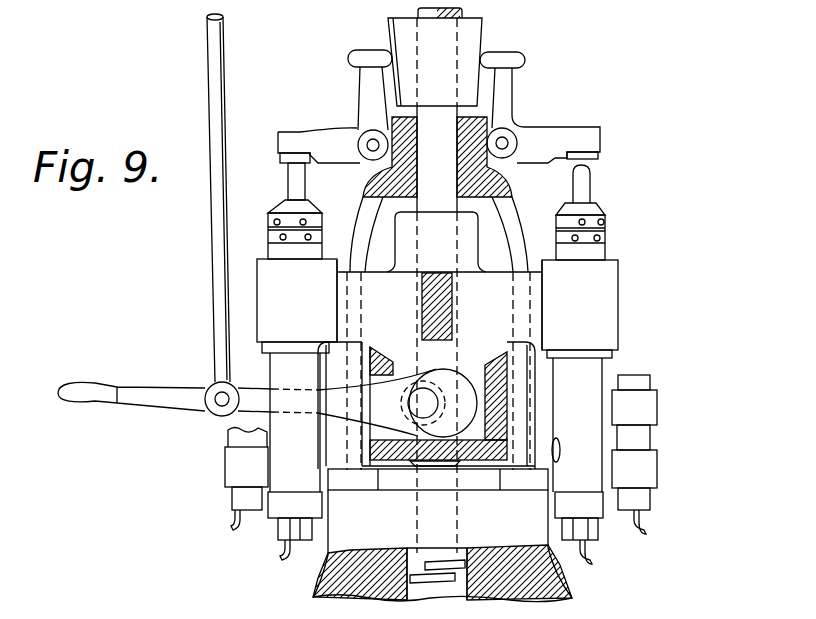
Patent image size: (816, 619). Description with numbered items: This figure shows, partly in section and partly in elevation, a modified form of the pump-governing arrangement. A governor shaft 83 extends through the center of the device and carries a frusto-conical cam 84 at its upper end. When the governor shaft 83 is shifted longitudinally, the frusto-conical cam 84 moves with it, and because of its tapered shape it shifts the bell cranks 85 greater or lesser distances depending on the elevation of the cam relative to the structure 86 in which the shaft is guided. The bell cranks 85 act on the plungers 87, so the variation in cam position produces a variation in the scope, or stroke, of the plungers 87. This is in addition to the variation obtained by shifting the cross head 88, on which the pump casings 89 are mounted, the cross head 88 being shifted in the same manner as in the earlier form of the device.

The governor shaft 83 is at (443, 137).
The frusto-conical cam 84 is at (470, 40).
The bell cranks 85 is at (505, 90).
The structure 86 is at (507, 193).
The plungers 87 is at (592, 178).
The cross head 88 is at (497, 318).
The pump casings 89 is at (598, 256).